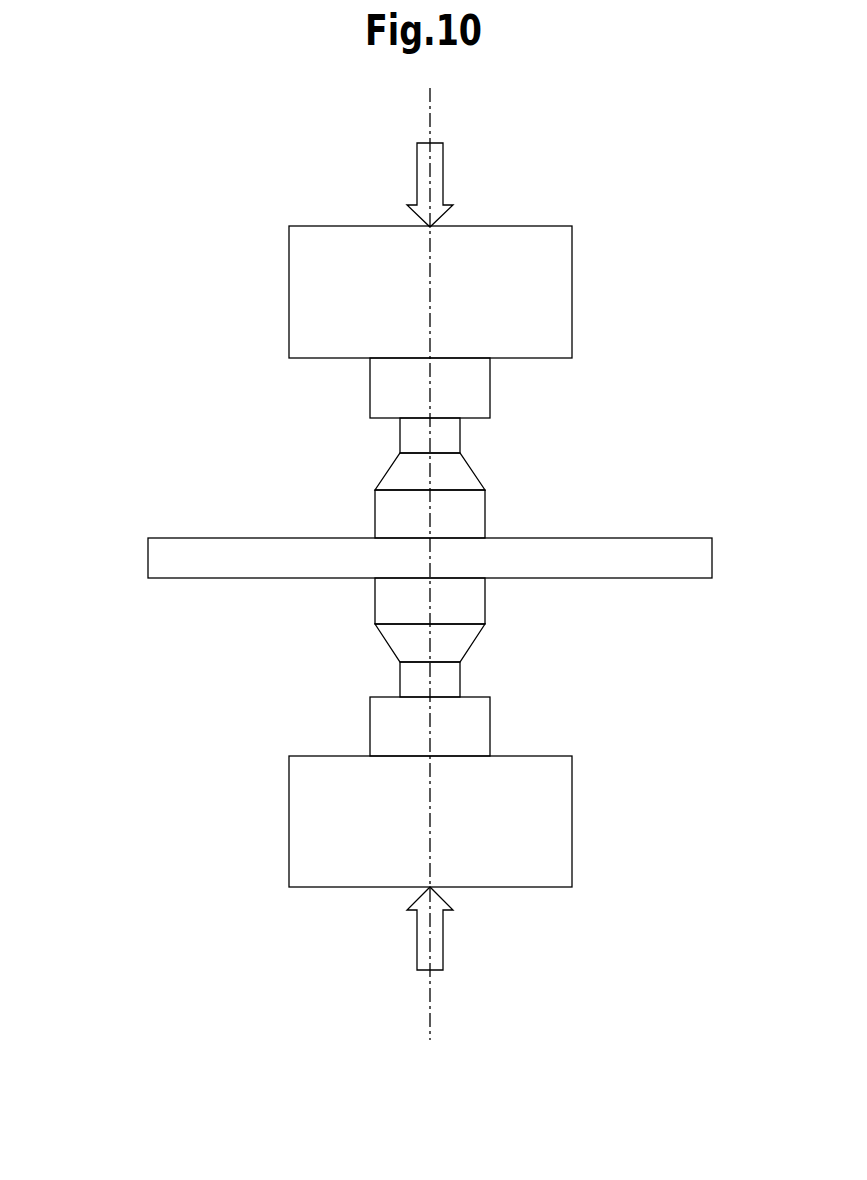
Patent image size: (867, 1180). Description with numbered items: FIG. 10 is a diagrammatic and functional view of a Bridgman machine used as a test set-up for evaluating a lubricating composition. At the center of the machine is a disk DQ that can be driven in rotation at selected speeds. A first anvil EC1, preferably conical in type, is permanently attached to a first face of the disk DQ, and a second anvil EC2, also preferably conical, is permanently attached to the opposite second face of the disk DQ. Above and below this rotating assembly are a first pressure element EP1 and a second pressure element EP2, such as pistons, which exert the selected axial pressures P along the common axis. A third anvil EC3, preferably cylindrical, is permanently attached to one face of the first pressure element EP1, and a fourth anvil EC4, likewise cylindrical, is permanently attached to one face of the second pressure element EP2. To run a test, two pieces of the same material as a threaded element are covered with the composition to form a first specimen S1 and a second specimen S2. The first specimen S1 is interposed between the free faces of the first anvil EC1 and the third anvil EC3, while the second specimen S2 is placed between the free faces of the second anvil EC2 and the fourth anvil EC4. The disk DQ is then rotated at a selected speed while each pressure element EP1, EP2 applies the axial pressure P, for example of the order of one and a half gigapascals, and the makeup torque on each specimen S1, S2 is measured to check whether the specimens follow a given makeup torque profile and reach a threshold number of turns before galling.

The axial pressure P is at (417, 178).
The first pressure element EP1 is at (289, 296).
The second pressure element EP2 is at (289, 826).
The third anvil EC3 is at (370, 385).
The fourth anvil EC4 is at (370, 735).
The first anvil EC1 is at (375, 517).
The second anvil EC2 is at (375, 603).
The first specimen S1 is at (460, 437).
The second specimen S2 is at (460, 681).
The disk DQ is at (148, 556).